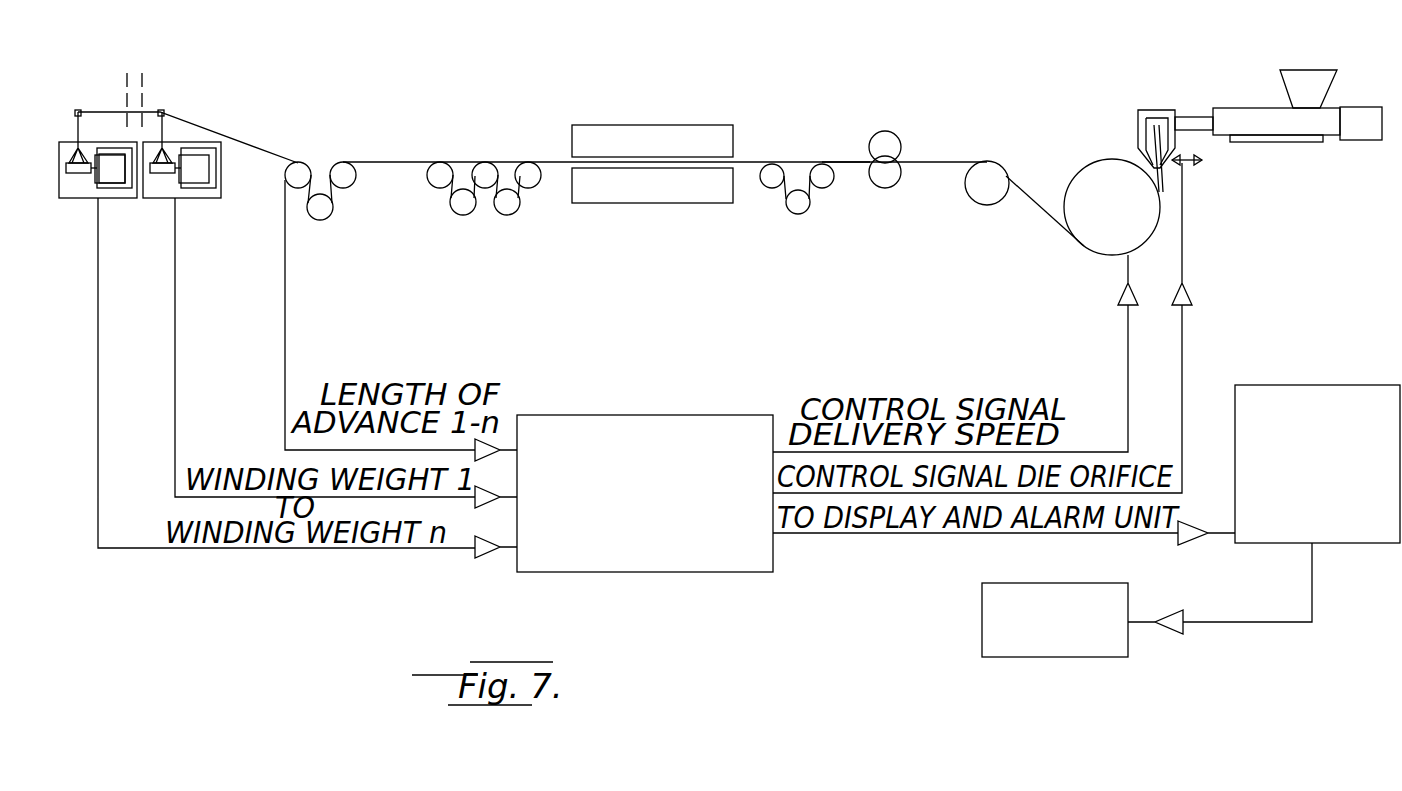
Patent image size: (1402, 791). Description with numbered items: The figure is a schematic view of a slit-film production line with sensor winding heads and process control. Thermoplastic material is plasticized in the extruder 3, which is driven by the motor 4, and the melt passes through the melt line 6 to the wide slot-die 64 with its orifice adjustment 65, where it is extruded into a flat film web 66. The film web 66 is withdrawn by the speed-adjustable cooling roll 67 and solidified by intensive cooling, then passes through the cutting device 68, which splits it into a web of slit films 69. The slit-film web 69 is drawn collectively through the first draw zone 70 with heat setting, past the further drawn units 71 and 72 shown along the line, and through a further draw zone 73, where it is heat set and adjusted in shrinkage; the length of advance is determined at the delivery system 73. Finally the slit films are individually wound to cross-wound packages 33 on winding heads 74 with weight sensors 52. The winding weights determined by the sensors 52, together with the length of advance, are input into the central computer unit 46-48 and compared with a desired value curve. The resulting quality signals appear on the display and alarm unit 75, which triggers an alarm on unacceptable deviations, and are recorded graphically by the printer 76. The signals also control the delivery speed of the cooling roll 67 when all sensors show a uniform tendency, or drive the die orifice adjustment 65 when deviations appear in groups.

The extruder 3 is at (1283, 118).
The motor 4 is at (1362, 130).
The melt line 6 is at (1195, 120).
The cross-wound packages 33 is at (77, 170).
The central computer unit 46-48 is at (683, 510).
The weight sensors 52 is at (178, 187).
The wide slot-die 64 is at (1152, 112).
The orifice adjustment 65 is at (1187, 167).
The film web 66 is at (1037, 207).
The cooling roll 67 is at (1093, 227).
The cutting device 68 is at (897, 147).
The web of slit films 69 is at (845, 162).
The first draw zone 70 is at (793, 203).
The treatment unit 71 is at (650, 137).
The roller set 72 is at (488, 157).
The further draw zone 73 is at (320, 173).
The winding heads 74 is at (184, 100).
The display and alarm unit 75 is at (1353, 474).
The printer 76 is at (1070, 635).